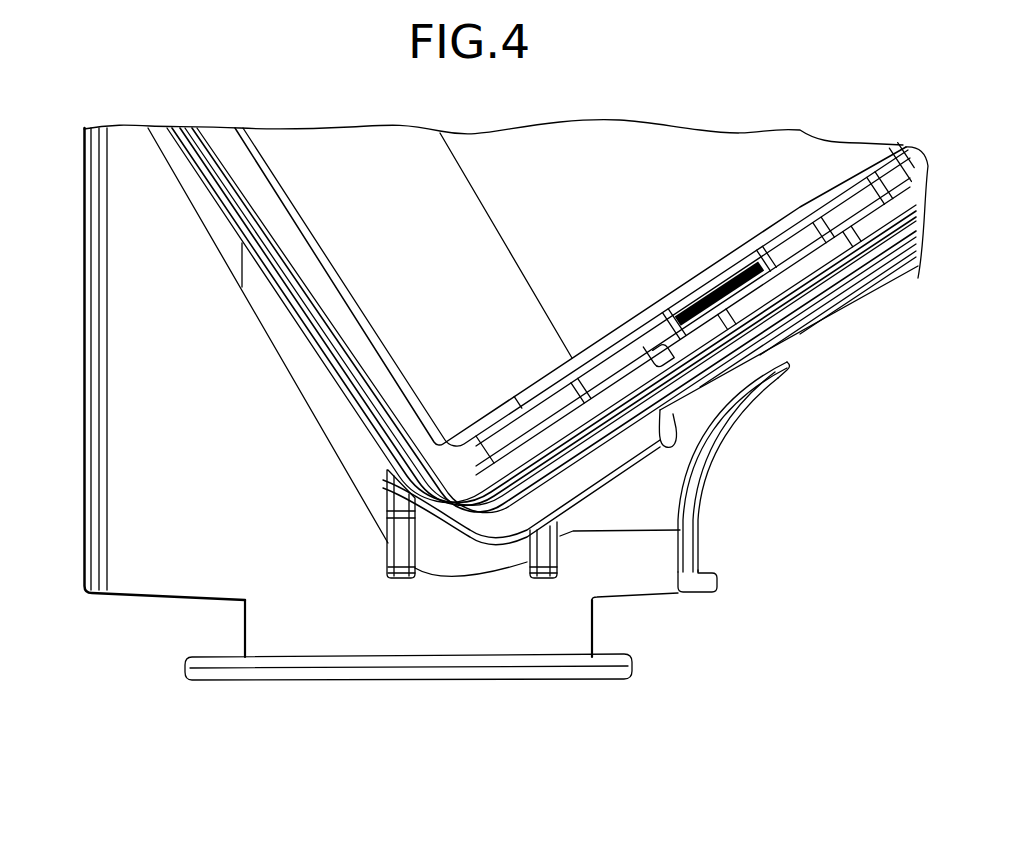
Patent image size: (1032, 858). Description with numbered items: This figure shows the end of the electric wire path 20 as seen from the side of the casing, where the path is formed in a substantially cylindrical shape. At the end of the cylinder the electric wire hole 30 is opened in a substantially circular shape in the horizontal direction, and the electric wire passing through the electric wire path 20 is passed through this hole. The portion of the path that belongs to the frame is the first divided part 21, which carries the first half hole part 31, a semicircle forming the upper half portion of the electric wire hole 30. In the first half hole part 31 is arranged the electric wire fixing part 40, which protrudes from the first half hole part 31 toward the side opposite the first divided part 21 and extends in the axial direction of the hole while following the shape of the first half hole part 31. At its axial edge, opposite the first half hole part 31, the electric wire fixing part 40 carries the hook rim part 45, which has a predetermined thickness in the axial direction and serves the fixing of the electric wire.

The electric wire path 20 is at (289, 716).
The first divided part 21 is at (165, 381).
The electric wire hole 30 is at (180, 681).
The first half hole part 31 is at (132, 597).
The electric wire fixing part 40 is at (397, 682).
The hook rim part 45 is at (573, 628).